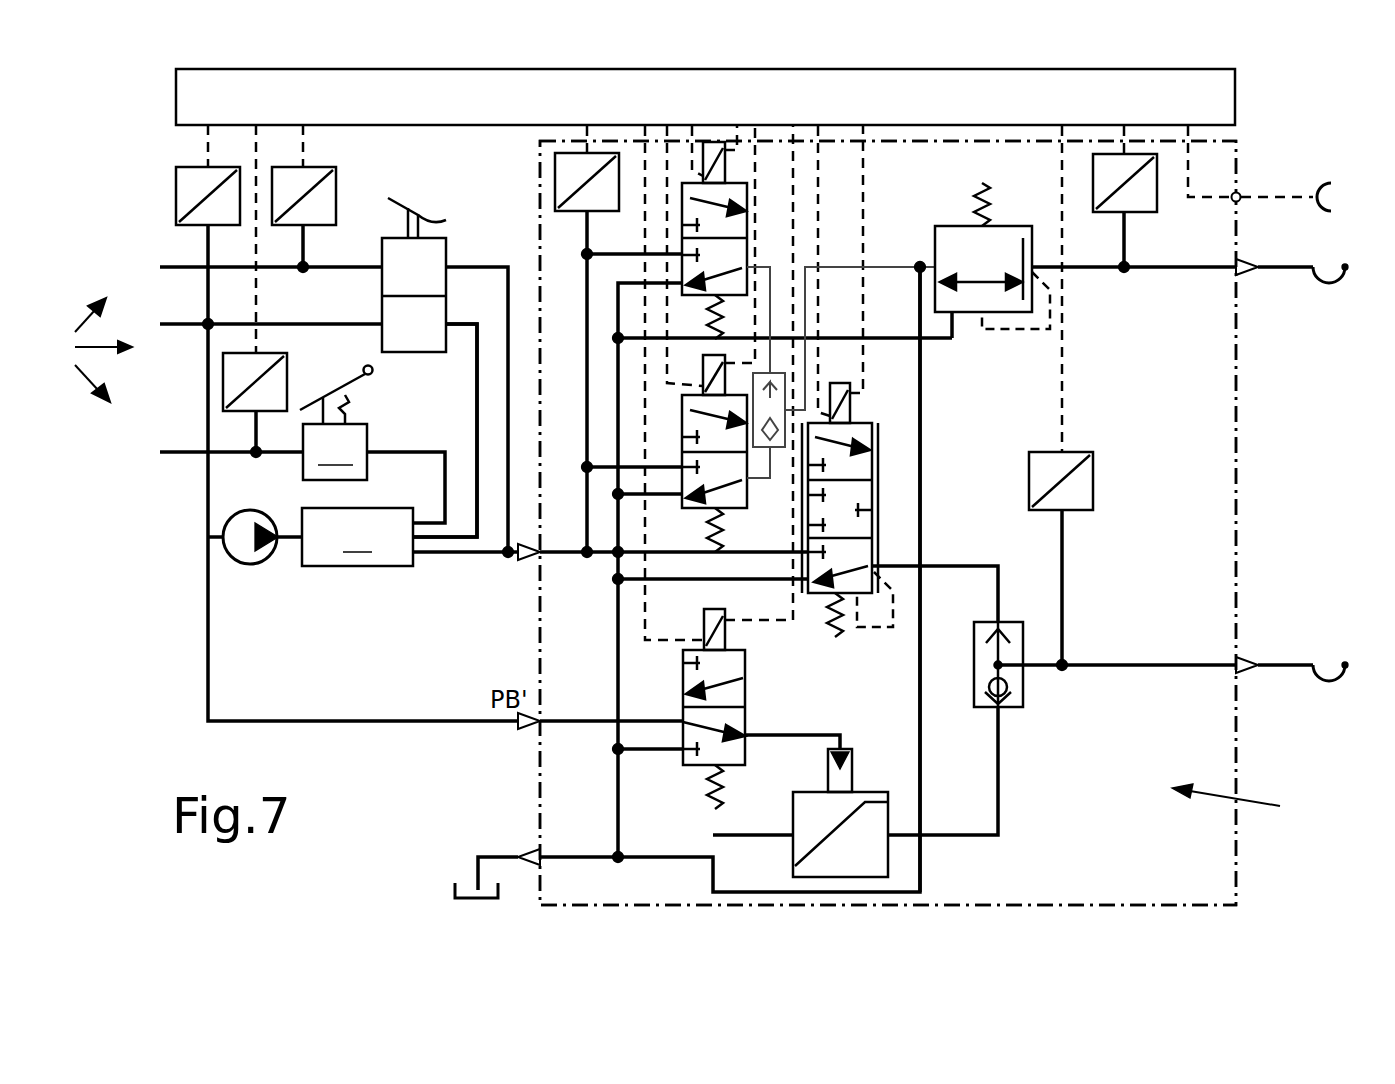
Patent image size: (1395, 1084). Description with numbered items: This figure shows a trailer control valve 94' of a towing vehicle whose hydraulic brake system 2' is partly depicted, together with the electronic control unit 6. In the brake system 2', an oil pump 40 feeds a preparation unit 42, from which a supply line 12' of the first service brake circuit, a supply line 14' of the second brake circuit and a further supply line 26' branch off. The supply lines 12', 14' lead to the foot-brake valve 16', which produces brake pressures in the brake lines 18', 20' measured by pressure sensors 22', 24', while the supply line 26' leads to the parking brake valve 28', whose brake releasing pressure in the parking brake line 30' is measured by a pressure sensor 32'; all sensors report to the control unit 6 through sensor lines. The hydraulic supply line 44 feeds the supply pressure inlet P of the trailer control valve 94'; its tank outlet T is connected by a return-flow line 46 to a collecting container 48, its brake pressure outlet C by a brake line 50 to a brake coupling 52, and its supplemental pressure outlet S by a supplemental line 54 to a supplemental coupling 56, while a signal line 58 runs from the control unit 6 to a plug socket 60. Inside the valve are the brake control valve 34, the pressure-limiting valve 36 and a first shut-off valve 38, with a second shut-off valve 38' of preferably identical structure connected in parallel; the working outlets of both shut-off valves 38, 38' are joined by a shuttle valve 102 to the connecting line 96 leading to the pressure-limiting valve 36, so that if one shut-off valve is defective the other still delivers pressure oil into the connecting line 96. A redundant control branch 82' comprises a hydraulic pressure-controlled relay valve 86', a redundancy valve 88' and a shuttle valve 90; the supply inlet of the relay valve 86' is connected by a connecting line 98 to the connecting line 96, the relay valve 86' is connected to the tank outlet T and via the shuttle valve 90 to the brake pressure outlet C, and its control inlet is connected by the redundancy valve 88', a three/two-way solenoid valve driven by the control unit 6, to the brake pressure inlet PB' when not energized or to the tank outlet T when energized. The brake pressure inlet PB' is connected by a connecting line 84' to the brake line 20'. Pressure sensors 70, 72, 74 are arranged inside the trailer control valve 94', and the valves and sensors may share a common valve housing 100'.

The electronic control unit 6 is at (713, 110).
The hydraulic brake system 2' is at (88, 350).
The supply line 12' is at (406, 360).
The supply line 14' is at (428, 430).
The foot-brake valve 16' is at (375, 294).
The brake line 18' is at (250, 249).
The brake line 20' is at (251, 309).
The pressure sensor 22' is at (334, 218).
The pressure sensor 24' is at (171, 196).
The supply line 26' is at (406, 487).
The parking brake valve 28' is at (336, 423).
The parking brake line 30' is at (210, 435).
The pressure sensor 32' is at (289, 396).
The brake control valve 34 is at (878, 442).
The pressure-limiting valve 36 is at (1016, 226).
The shut-off valve 38 is at (735, 240).
The second shut-off valve 38' is at (697, 453).
The oil pump 40 is at (223, 540).
The preparation unit 42 is at (357, 537).
The hydraulic supply line 44 is at (460, 556).
The return-flow line 46 is at (478, 866).
The collecting container 48 is at (462, 901).
The brake line 50 is at (1288, 663).
The brake coupling 52 is at (1332, 685).
The supplemental line 54 is at (1284, 265).
The supplemental coupling 56 is at (1331, 288).
The signal line 58 is at (1292, 195).
The plug socket 60 is at (1322, 214).
The pressure sensor 70 is at (584, 214).
The pressure sensor 72 is at (1094, 485).
The pressure sensor 74 is at (1158, 202).
The redundant control branch 82' is at (1247, 801).
The connecting line 84' is at (321, 473).
The relay valve 86' is at (850, 796).
The redundancy valve 88' is at (750, 709).
The shuttle valve 90 is at (1023, 692).
The trailer control valve 94' is at (967, 523).
The valve housing 100' is at (888, 523).
The connecting line 96 is at (892, 264).
The connecting line 98 is at (922, 440).
The shuttle valve 102 is at (833, 402).